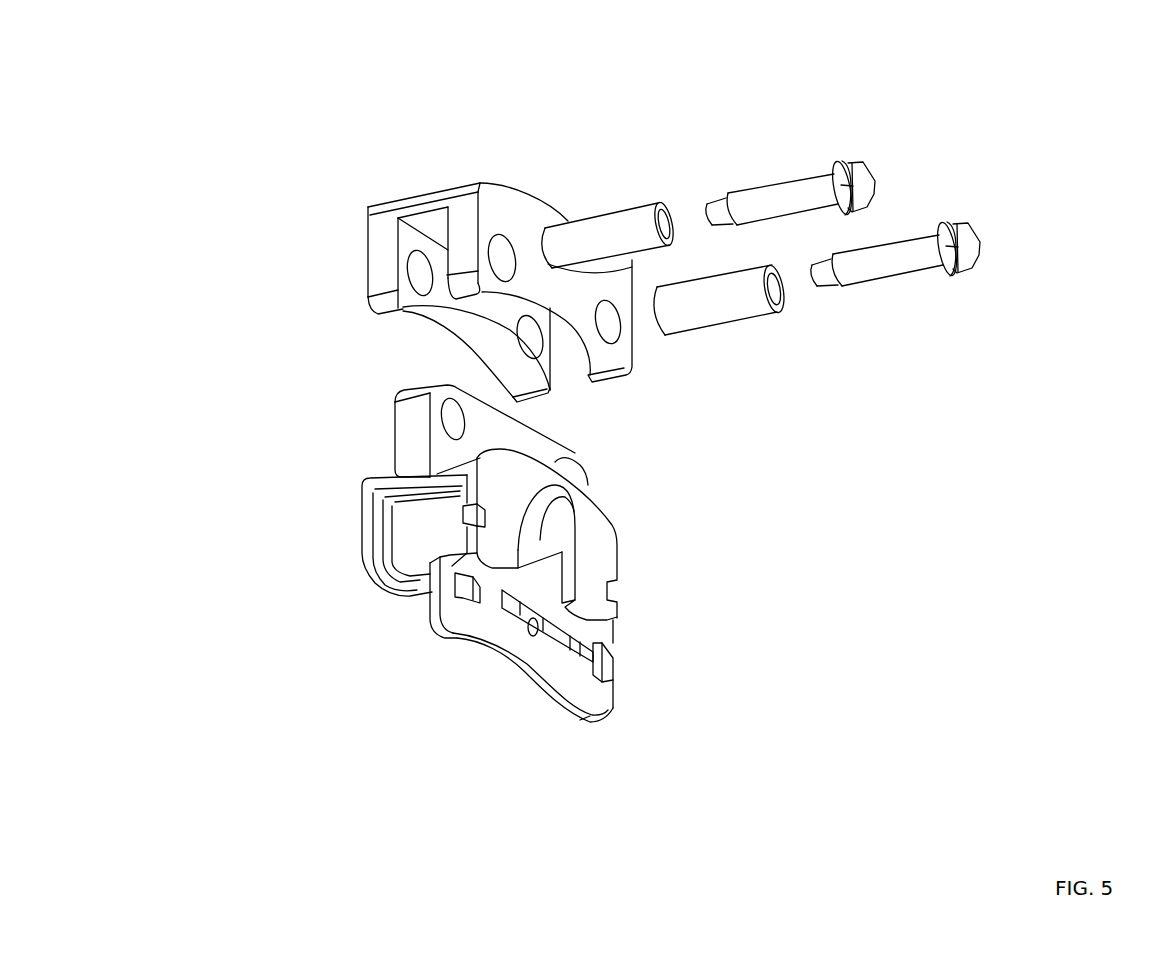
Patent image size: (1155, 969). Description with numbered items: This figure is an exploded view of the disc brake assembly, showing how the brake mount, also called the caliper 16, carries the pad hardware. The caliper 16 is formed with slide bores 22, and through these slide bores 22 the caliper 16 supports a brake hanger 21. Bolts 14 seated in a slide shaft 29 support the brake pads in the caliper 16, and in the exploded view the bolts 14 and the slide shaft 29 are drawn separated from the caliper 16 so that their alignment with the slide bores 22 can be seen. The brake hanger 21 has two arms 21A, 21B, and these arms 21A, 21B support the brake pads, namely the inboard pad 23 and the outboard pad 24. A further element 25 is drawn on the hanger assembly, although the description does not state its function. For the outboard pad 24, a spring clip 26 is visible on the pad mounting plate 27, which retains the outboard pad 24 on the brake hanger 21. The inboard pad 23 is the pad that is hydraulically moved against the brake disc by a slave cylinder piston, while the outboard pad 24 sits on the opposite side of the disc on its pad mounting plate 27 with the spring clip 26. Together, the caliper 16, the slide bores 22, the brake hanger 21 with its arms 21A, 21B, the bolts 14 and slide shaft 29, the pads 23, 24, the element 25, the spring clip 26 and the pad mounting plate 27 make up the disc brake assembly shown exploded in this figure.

The bolts 14 is at (905, 274).
The caliper 16 is at (517, 187).
The brake hanger 21 is at (392, 438).
The arm 21A is at (360, 505).
The arm 21B is at (508, 483).
The slide bores 22 is at (439, 408).
The inboard pad 23 is at (388, 545).
The outboard pad 24 is at (543, 693).
The tab 25 is at (460, 601).
The spring clip 26 is at (585, 650).
The pad mounting plate 27 is at (614, 706).
The slide shaft 29 is at (720, 322).